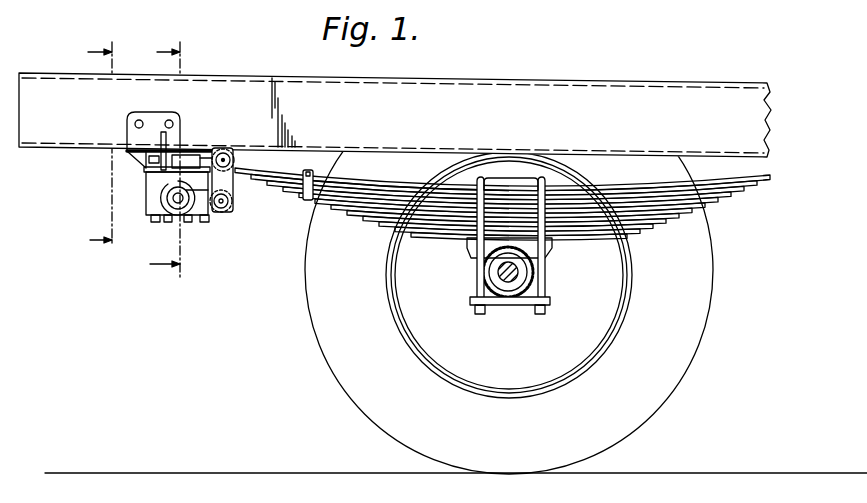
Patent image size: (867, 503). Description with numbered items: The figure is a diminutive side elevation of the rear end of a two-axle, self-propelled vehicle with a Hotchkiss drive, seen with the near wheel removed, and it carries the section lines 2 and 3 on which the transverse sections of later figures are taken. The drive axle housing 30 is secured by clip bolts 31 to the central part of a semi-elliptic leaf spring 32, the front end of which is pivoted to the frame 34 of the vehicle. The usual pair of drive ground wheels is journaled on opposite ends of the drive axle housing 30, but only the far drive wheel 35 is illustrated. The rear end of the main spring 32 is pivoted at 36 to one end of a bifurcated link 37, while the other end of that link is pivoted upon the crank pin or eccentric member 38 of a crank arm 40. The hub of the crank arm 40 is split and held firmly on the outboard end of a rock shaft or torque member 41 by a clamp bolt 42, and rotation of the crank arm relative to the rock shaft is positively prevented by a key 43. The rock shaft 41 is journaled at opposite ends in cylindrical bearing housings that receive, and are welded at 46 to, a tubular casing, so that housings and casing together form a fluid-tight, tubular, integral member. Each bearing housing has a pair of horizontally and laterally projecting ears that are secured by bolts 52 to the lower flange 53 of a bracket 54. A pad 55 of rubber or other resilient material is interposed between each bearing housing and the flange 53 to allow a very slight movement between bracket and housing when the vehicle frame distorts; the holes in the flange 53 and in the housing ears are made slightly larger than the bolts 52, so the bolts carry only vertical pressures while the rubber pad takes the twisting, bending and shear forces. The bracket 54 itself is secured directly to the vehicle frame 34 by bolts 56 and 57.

The section line 2- 2 is at (100, 152).
The section line 3- 3 is at (168, 163).
The drive axle housing 30 is at (511, 300).
The clip bolts 31 is at (476, 273).
The semi-elliptic leaf spring 32 is at (716, 205).
The frame 34 is at (700, 83).
The drive wheel 35 is at (661, 409).
The pivot 36 is at (233, 161).
The bifurcated link 37 is at (236, 178).
The crank pin 38 is at (226, 209).
The crank arm 40 is at (160, 193).
The rock shaft 41 is at (160, 207).
The clamp bolt 42 is at (168, 222).
The key 43 is at (190, 222).
The weld 46 is at (146, 195).
The bolts 52 is at (154, 222).
The lower flange 53 is at (185, 147).
The bracket 54 is at (182, 121).
The pad 55 is at (147, 172).
The bolt 56 is at (145, 167).
The bolt 57 is at (167, 120).